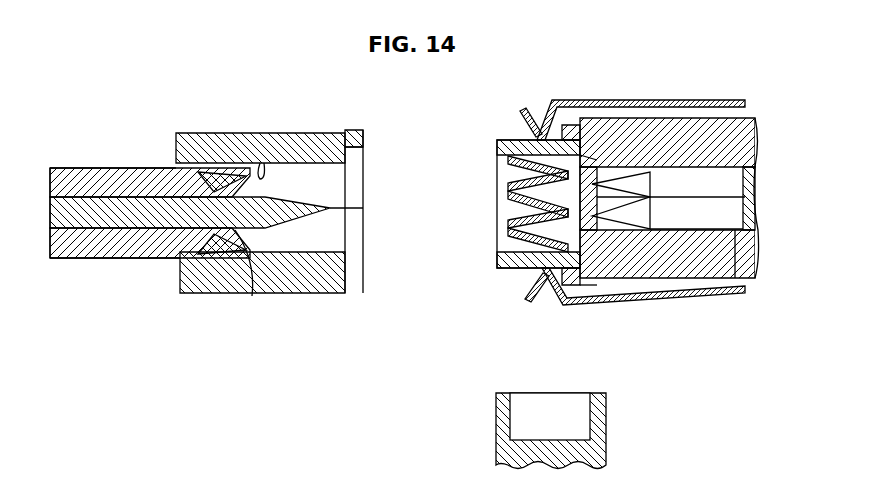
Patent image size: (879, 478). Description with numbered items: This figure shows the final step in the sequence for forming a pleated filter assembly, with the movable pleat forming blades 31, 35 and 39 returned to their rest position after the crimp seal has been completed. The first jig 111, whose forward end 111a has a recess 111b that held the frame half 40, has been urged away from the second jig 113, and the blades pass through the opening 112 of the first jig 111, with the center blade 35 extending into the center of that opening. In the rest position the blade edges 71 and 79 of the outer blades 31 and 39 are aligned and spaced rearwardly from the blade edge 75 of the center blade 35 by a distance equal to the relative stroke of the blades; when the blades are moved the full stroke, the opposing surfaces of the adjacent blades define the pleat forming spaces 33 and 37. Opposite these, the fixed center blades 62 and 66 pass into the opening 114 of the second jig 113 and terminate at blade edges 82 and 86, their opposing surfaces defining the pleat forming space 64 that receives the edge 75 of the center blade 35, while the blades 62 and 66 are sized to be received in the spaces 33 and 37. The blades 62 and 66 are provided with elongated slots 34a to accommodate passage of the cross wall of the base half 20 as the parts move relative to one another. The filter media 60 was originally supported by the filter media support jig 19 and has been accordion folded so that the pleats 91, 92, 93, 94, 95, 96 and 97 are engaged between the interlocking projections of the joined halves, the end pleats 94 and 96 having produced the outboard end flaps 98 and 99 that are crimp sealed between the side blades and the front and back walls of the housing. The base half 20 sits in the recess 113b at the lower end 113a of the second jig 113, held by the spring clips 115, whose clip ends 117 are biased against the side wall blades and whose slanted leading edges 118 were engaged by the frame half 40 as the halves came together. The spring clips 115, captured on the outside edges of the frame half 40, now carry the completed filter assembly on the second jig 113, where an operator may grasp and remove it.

The filter media support jig 19 is at (612, 412).
The base half 20 is at (578, 128).
The pleat forming blade 31 is at (70, 168).
The pleat forming space 33 is at (240, 176).
The elongated slot 34a is at (720, 216).
The center blade 35 is at (96, 208).
The pleat forming space 37 is at (202, 236).
The pleat forming blade 39 is at (78, 260).
The frame half 40 is at (495, 134).
The filter media 60 is at (500, 206).
The fixed center blade 62 is at (737, 166).
The pleat forming space 64 is at (628, 198).
The fixed center blade 66 is at (744, 296).
The blade edge 71 is at (216, 185).
The blade edge 75 is at (340, 208).
The blade edge 79 is at (243, 281).
The blade edge 82 is at (610, 172).
The blade edge 86 is at (626, 228).
The pleat 91 is at (512, 186).
The pleat 92 is at (595, 201).
The pleat 93 is at (512, 226).
The end pleat 94 is at (520, 150).
The pleat 95 is at (596, 149).
The end pleat 96 is at (520, 258).
The pleat 97 is at (601, 250).
The outboard end flap 98 is at (512, 140).
The outboard end flap 99 is at (520, 266).
The first jig 111 is at (220, 128).
The forward end 111a is at (355, 132).
The recess 111b is at (362, 152).
The opening 112 is at (263, 160).
The second jig 113 is at (702, 112).
The lower end 113a is at (568, 290).
The recess 113b is at (590, 292).
The opening 114 is at (702, 172).
The spring clip 115 is at (666, 90).
The clip end 117 is at (538, 108).
The leading edge 118 is at (522, 118).